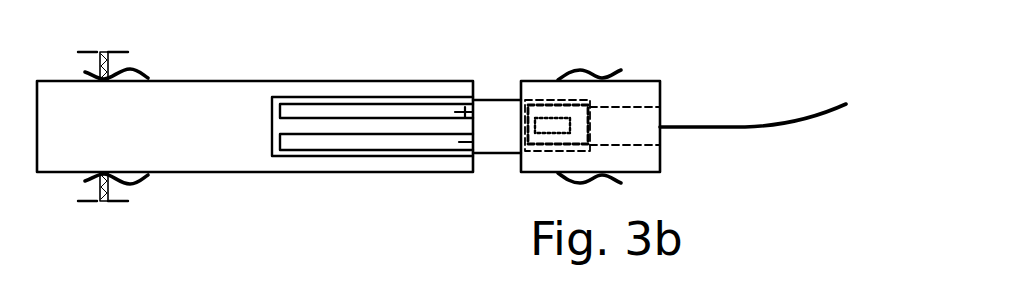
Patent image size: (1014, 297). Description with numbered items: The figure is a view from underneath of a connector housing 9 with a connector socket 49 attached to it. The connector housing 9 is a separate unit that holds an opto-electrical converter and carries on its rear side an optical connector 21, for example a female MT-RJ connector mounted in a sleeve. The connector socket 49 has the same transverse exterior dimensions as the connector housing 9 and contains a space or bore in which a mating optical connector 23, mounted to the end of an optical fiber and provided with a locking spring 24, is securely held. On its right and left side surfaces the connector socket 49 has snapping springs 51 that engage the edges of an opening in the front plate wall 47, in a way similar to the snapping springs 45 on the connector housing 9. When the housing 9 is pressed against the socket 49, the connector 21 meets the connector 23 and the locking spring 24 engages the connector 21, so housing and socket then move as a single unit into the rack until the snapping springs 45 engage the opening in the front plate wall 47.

The connector housing 9 is at (202, 167).
The optical connector 21 is at (485, 101).
The optical connector 23 is at (645, 107).
The locking spring 24 is at (540, 134).
The snapping spring 45 is at (143, 80).
The front plate wall 47 is at (97, 190).
The connector socket 49 is at (543, 81).
The snapping spring 51 is at (585, 72).